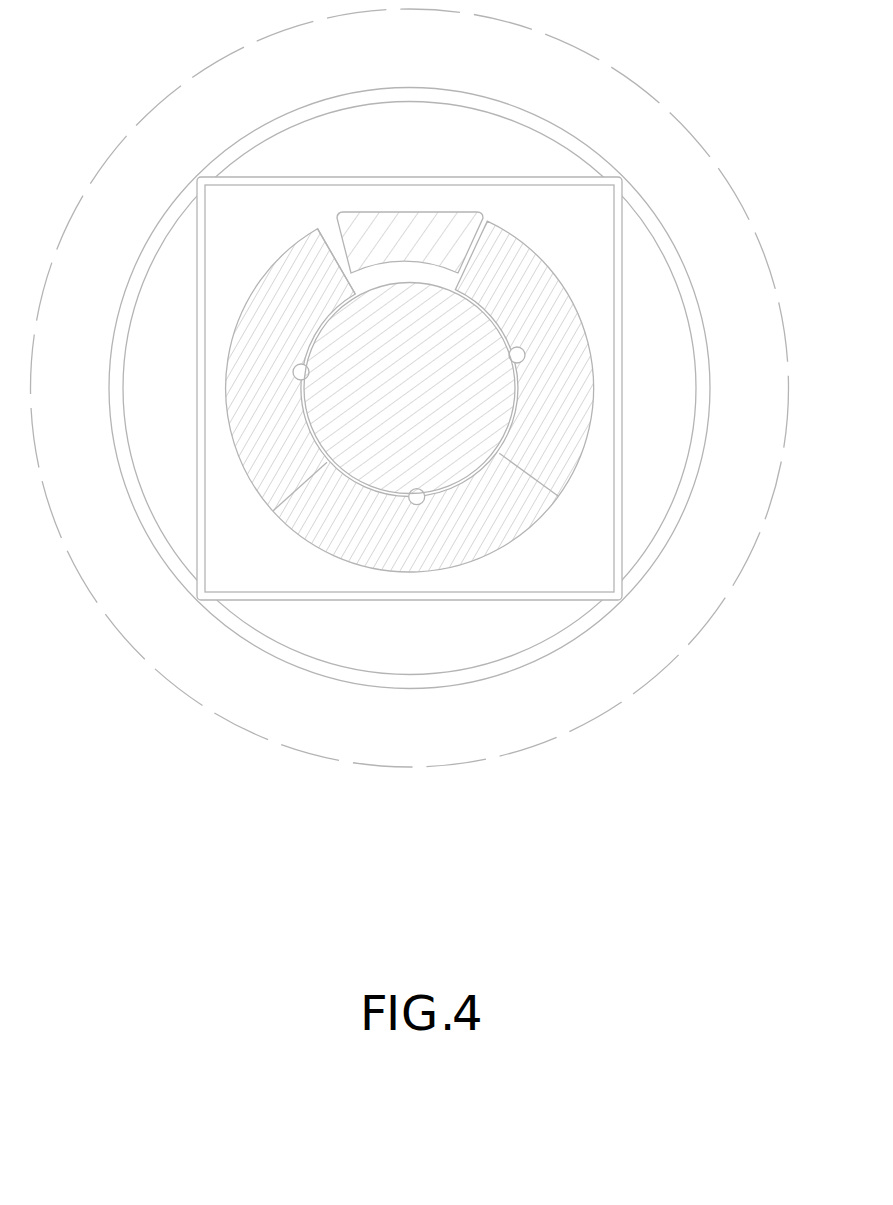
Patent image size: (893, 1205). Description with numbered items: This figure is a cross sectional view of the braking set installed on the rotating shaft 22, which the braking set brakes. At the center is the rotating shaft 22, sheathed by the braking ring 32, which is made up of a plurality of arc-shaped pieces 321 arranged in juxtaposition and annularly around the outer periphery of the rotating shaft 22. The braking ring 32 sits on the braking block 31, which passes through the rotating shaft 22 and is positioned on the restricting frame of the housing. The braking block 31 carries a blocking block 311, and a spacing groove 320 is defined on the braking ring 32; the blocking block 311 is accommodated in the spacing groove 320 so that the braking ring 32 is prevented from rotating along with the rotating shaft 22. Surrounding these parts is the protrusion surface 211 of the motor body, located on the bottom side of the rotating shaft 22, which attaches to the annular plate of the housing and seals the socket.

The protrusion surface 211 is at (660, 352).
The rotating shaft 22 is at (493, 403).
The braking block 31 is at (598, 516).
The braking ring 32 is at (572, 287).
The blocking block 311 is at (413, 233).
The spacing groove 320 is at (332, 233).
The arc-shaped pieces 321 is at (287, 305).